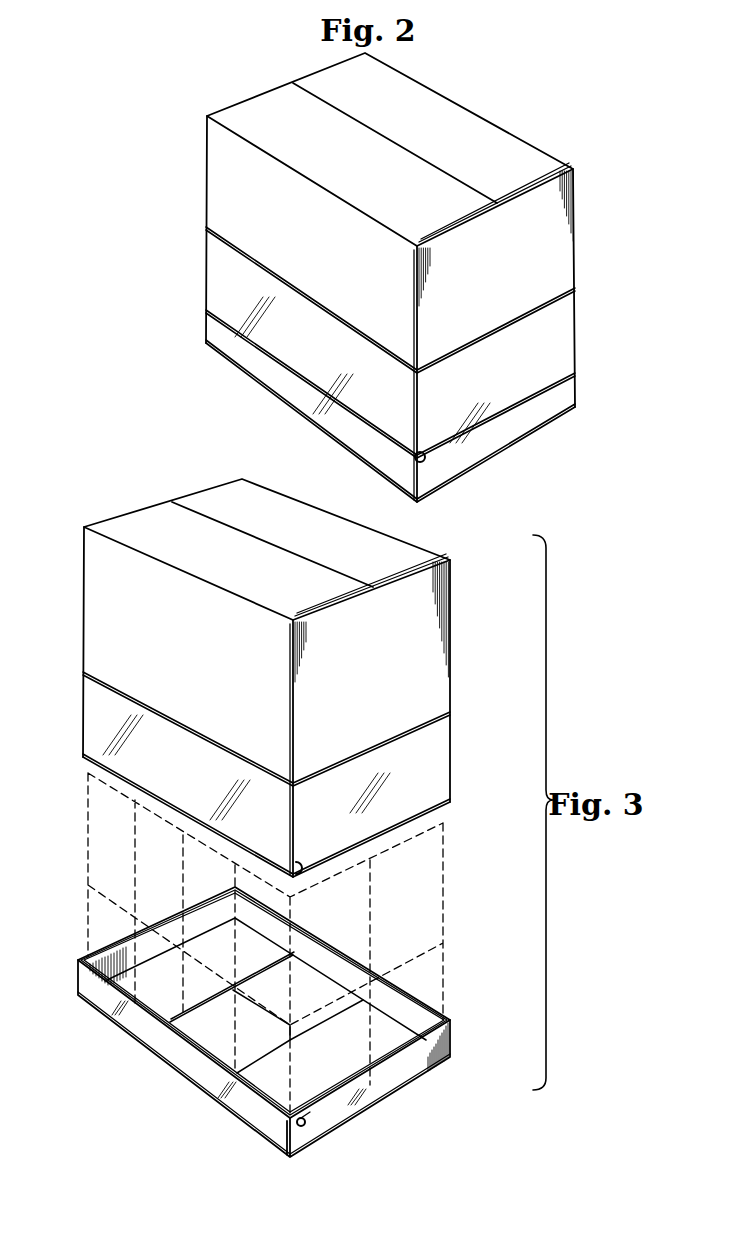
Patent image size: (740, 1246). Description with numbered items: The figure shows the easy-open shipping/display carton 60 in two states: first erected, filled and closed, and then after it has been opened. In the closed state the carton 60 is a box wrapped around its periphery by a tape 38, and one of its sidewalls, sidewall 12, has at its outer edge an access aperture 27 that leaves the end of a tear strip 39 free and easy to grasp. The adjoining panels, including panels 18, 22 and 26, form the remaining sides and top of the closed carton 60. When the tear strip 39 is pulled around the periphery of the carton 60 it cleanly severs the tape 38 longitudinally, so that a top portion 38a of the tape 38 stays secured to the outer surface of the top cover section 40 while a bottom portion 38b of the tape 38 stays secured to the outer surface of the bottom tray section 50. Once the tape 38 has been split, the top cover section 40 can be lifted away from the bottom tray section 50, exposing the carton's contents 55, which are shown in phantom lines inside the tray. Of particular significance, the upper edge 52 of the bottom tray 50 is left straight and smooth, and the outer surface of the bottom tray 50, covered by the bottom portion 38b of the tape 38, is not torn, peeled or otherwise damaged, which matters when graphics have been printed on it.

In FIG. 2, the sidewall 12 is at (557, 245).
In FIG. 3, the sidewall 12 is at (423, 605).
In FIG. 2, the side panel 18 is at (222, 182).
In FIG. 3, the side panel 18 is at (100, 593).
In FIG. 2, the top panel 22 is at (432, 110).
In FIG. 3, the top panel 22 is at (225, 497).
In FIG. 2, the top fold panel 26 is at (252, 113).
In FIG. 3, the top fold panel 26 is at (120, 522).
In FIG. 2, the access aperture 27 is at (415, 457).
In FIG. 2, the tape 38 is at (555, 341).
In FIG. 3, the top portion of tape 38a is at (433, 758).
In FIG. 3, the bottom portion of tape 38b is at (408, 1070).
In FIG. 2, the tear strip 39 is at (550, 390).
In FIG. 3, the top cover section 40 is at (465, 637).
In FIG. 3, the bottom tray section 50 is at (476, 1036).
In FIG. 3, the upper edge of bottom tray 52 is at (207, 1058).
In FIG. 3, the carton's contents 55 is at (418, 895).
In FIG. 2, the carton 60 is at (603, 166).